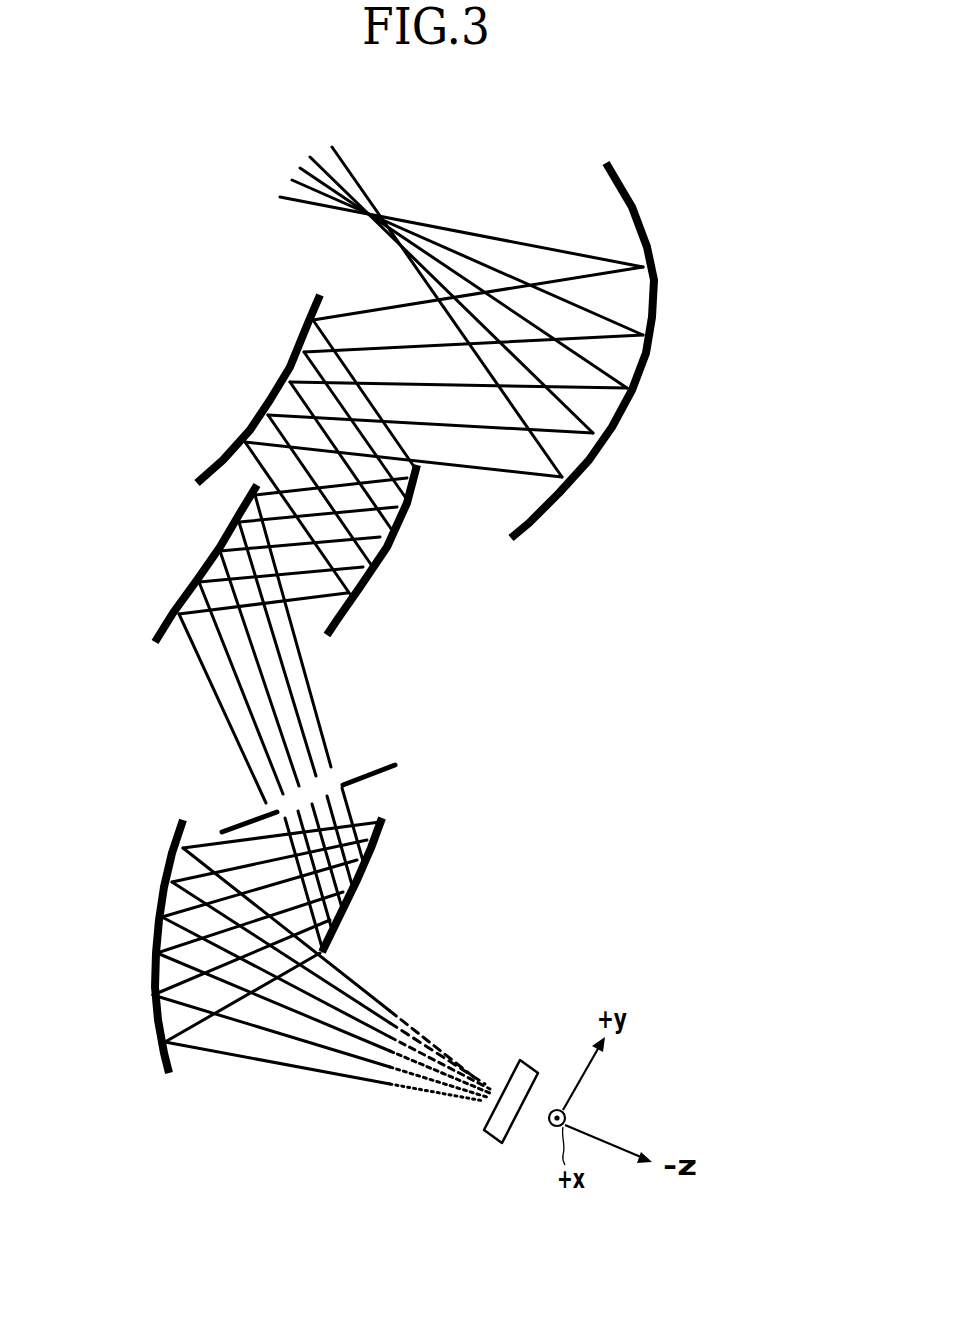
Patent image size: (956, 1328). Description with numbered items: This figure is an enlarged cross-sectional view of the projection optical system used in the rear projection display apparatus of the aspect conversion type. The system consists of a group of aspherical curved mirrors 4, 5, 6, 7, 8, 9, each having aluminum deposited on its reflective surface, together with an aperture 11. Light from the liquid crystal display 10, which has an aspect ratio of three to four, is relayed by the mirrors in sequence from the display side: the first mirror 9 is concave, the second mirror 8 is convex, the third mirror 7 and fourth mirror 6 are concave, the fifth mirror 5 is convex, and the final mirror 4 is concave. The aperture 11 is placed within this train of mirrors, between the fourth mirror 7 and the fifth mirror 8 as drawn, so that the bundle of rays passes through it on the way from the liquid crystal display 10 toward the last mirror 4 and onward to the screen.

The aspherical curved mirror 4 is at (603, 449).
The aspherical curved mirror 5 is at (246, 432).
The aspherical curved mirror 6 is at (354, 600).
The aspherical curved mirror 7 is at (212, 550).
The aspherical curved mirror 8 is at (346, 903).
The aspherical curved mirror 9 is at (152, 950).
The liquid crystal display 10 is at (486, 1138).
The aperture 11 is at (392, 769).